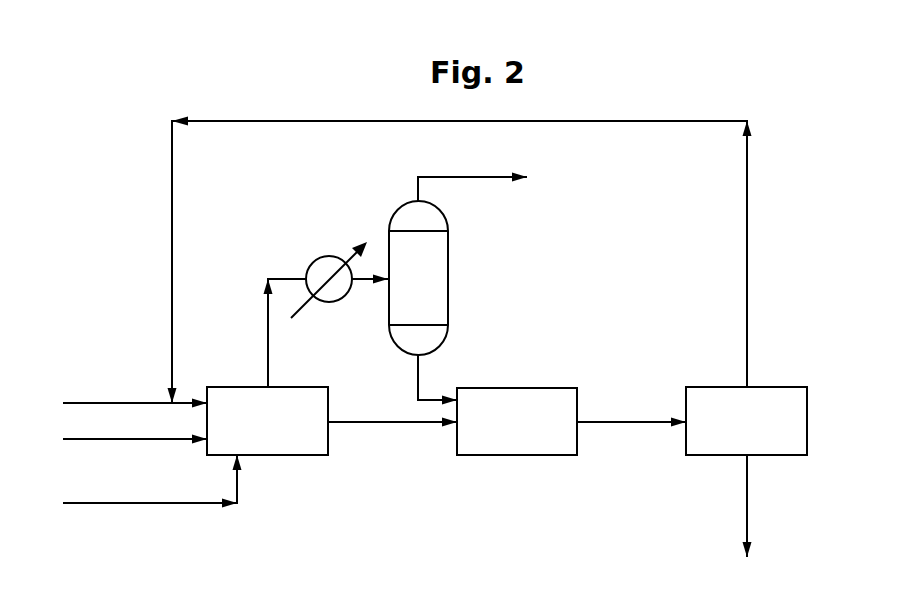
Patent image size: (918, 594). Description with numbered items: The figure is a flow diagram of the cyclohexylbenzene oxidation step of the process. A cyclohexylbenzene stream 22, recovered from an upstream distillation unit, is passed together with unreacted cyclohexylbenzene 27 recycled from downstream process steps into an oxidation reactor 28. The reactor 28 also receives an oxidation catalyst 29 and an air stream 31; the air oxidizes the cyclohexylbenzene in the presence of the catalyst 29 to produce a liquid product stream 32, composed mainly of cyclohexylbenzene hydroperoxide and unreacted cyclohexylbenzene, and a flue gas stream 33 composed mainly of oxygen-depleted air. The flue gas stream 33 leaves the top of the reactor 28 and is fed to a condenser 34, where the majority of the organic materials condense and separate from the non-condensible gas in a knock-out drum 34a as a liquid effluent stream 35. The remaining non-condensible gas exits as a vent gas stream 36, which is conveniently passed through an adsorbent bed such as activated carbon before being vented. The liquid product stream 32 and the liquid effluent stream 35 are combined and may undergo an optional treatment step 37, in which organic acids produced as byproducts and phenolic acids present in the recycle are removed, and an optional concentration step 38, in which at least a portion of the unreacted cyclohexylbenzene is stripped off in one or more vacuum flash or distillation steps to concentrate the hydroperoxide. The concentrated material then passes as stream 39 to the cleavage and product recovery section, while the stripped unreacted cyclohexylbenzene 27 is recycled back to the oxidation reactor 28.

The cyclohexylbenzene stream 22 is at (83, 402).
The unreacted cyclohexylbenzene 27 is at (170, 243).
The oxidation reactor 28 is at (287, 455).
The oxidation catalyst 29 is at (83, 502).
The air stream 31 is at (83, 438).
The liquid product stream 32 is at (407, 420).
The flue gas stream 33 is at (266, 330).
The condenser 34 is at (318, 258).
The knock-out drum 34a is at (448, 279).
The liquid effluent stream 35 is at (420, 372).
The vent gas stream 36 is at (468, 178).
The optional treatment step 37 is at (525, 455).
The optional concentration step 38 is at (807, 424).
The stream 39 is at (745, 508).